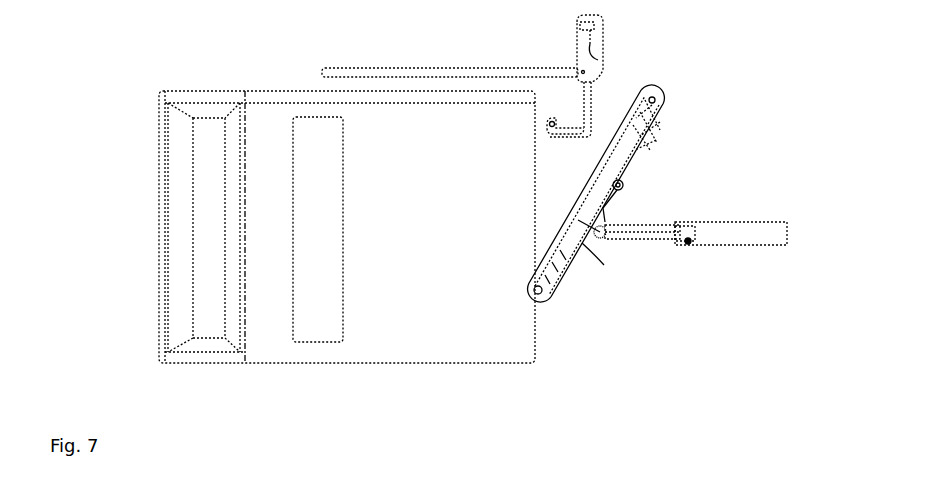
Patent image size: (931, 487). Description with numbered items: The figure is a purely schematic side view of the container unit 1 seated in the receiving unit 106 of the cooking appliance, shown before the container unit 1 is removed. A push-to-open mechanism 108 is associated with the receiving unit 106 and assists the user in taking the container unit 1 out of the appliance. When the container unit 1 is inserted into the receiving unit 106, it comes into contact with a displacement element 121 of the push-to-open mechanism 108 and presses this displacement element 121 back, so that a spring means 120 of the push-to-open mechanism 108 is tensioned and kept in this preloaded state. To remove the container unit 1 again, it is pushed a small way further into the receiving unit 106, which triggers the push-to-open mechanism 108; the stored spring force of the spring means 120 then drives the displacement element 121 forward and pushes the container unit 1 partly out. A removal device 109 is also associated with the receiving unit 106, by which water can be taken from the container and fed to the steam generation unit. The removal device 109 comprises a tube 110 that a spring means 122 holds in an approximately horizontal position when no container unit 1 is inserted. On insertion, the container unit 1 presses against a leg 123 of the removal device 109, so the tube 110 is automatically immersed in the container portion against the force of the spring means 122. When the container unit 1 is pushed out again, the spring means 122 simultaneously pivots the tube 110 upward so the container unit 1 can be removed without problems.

The container unit 1 is at (75, 48).
The tube 110 is at (418, 67).
The spring means 122 is at (568, 57).
The removal device 109 is at (608, 63).
The leg 123 is at (563, 132).
The receiving unit 106 is at (695, 126).
The spring means 120 is at (680, 223).
The displacement element 121 is at (577, 252).
The push-to-open mechanism 108 is at (672, 263).